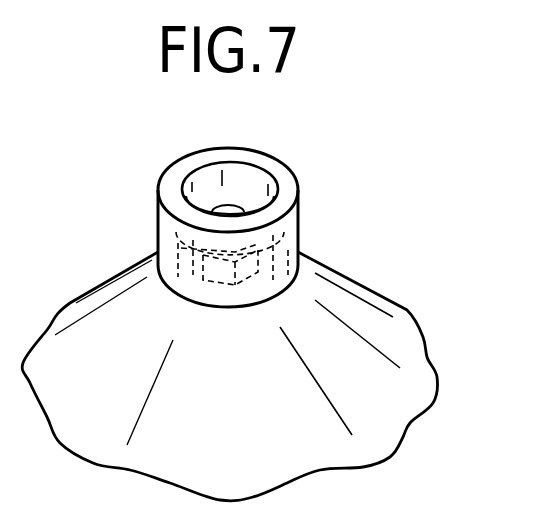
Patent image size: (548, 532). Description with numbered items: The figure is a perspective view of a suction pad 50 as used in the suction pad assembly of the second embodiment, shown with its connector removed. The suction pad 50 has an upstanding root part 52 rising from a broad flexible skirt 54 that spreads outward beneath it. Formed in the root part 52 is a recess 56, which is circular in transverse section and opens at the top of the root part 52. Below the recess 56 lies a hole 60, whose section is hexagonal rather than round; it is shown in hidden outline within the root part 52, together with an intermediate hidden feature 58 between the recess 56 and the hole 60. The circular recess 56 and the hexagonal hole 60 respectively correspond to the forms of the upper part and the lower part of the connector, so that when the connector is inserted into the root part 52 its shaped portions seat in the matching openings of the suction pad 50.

The suction pad 50 is at (364, 277).
The root part 52 is at (296, 243).
The flexible skirt 54 is at (410, 363).
The recess 56 is at (186, 198).
The recess 58 is at (158, 251).
The hole 60 is at (198, 278).